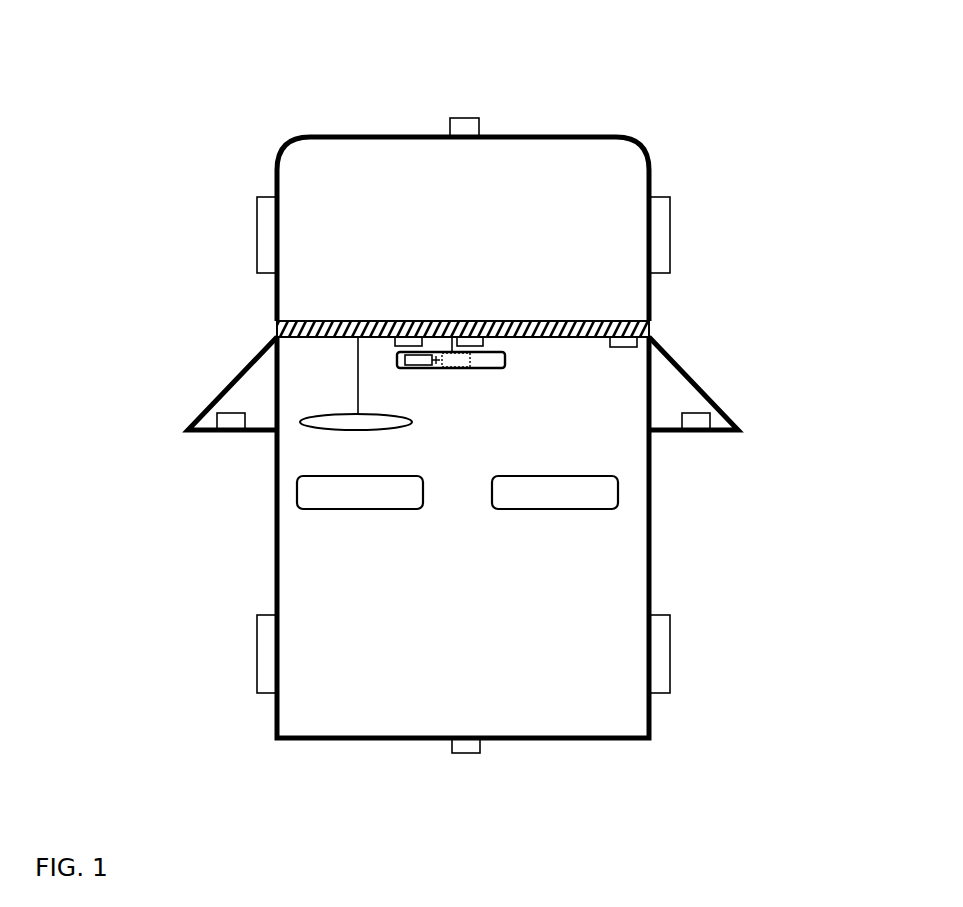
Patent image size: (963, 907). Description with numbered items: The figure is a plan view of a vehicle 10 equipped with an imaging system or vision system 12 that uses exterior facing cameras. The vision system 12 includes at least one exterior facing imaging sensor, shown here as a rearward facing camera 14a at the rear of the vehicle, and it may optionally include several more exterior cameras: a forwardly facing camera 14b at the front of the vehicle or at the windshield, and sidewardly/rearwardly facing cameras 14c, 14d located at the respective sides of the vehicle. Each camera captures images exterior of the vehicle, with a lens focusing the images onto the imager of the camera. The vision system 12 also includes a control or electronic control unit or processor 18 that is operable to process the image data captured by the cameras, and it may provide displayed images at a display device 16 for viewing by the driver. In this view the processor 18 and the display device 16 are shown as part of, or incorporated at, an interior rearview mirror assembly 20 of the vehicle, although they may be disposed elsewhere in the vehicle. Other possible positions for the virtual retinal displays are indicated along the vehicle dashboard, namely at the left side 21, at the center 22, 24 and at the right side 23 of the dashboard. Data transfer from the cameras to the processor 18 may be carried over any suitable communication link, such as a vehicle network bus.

The vehicle 10 is at (197, 152).
The vision system 12 is at (418, 768).
The rearward facing camera 14a is at (468, 750).
The forwardly facing camera 14b is at (462, 121).
The sidewardly/rearwardly facing camera 14c is at (228, 418).
The sidewardly/rearwardly facing camera 14d is at (698, 420).
The display device 16 is at (420, 361).
The electronic control unit 18 is at (460, 361).
The interior rearview mirror assembly 20 is at (505, 357).
The left side of the vehicle dashboard 21 is at (278, 331).
The center of the vehicle dashboard 22 is at (472, 342).
The right side of the vehicle dashboard 23 is at (646, 333).
The center of the vehicle dashboard 24 is at (412, 341).